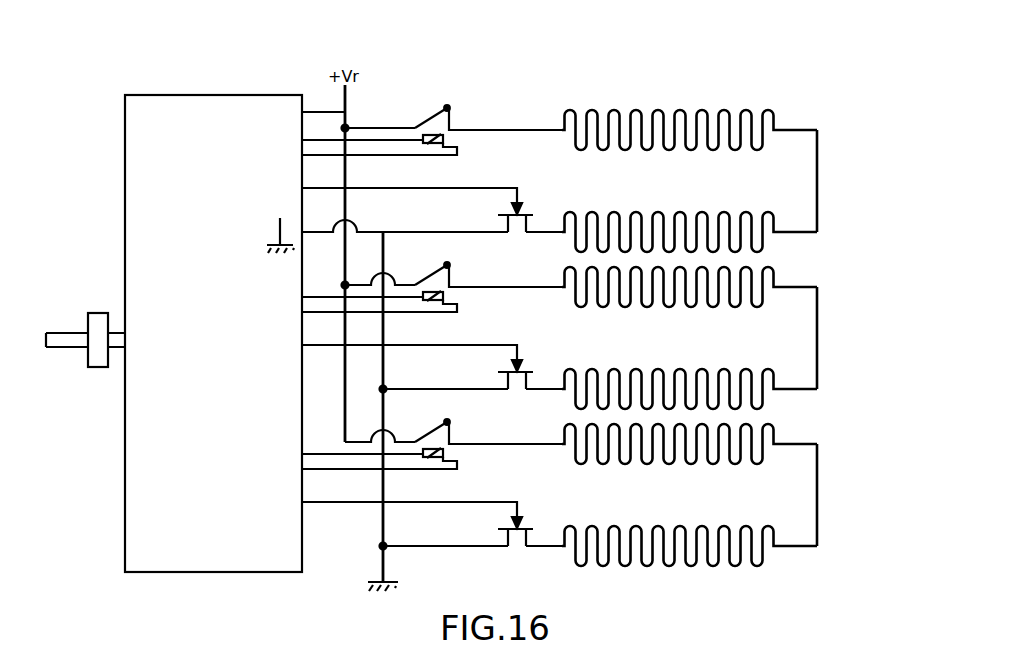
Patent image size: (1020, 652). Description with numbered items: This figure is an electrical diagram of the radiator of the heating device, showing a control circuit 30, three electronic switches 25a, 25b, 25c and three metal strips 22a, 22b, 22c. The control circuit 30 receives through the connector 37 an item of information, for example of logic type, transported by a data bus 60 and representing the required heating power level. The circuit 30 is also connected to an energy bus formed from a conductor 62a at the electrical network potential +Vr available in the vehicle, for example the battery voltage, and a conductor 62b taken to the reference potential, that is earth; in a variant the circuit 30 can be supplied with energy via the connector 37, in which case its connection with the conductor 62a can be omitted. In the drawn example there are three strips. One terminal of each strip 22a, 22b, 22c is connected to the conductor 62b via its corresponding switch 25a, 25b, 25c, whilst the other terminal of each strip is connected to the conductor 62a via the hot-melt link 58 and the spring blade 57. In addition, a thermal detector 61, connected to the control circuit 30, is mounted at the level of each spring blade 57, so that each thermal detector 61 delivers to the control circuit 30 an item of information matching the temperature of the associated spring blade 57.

The control circuit 30 is at (207, 103).
The data bus 60 is at (75, 331).
The connector 37 is at (97, 370).
The spring blade 57 is at (433, 122).
The hot-melt link 58 is at (450, 106).
The thermal detector 61 is at (458, 148).
The electronic switch 25a is at (524, 211).
The electronic switch 25b is at (524, 368).
The electronic switch 25c is at (524, 525).
The metal strip 22a is at (733, 100).
The metal strip 22b is at (788, 265).
The metal strip 22c is at (788, 424).
The conductor 62a is at (333, 447).
The conductor 62b is at (380, 543).